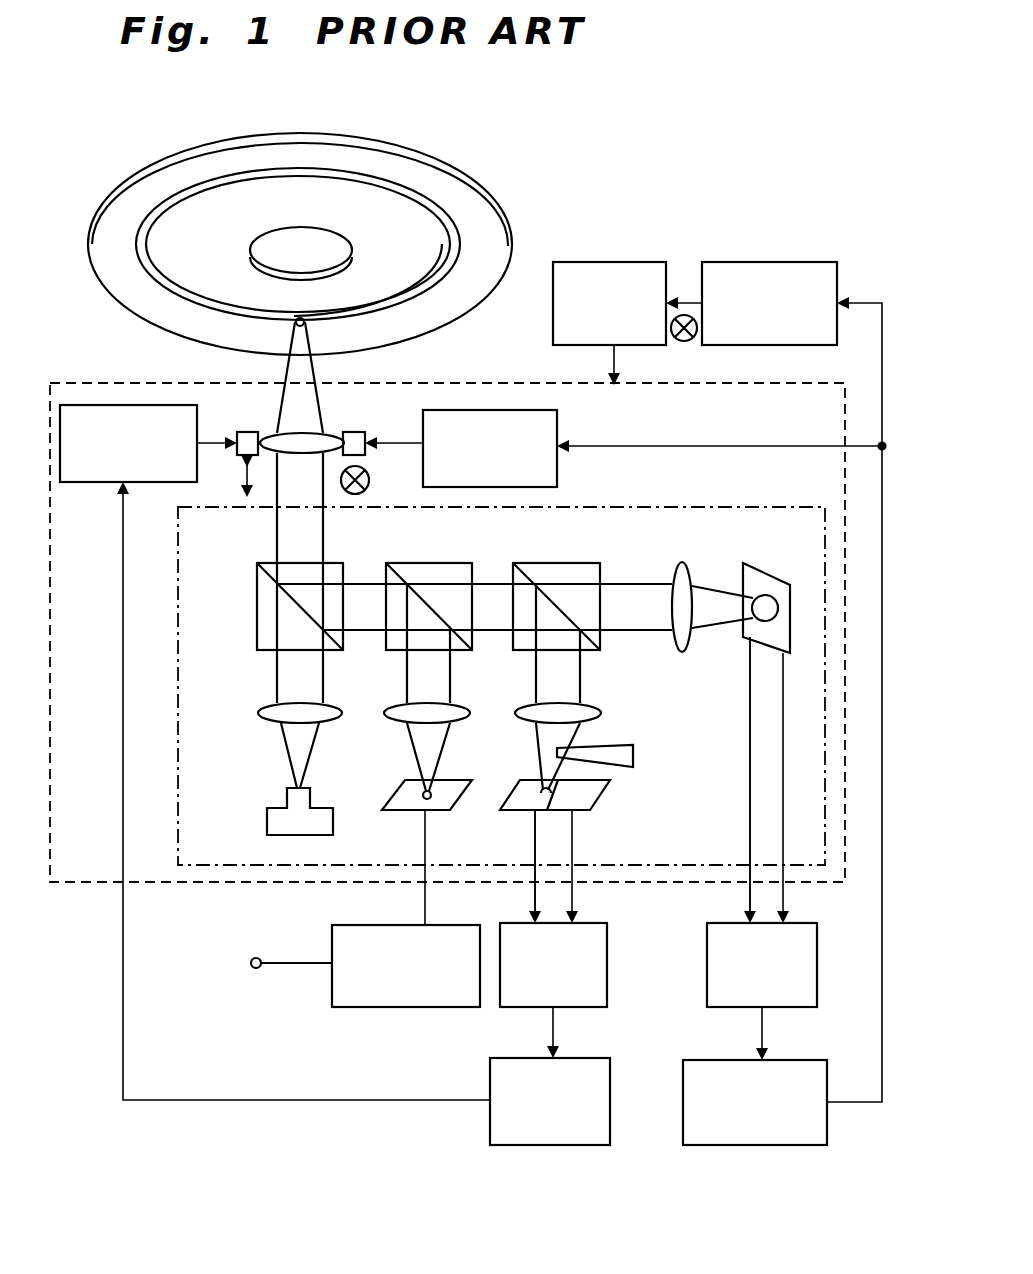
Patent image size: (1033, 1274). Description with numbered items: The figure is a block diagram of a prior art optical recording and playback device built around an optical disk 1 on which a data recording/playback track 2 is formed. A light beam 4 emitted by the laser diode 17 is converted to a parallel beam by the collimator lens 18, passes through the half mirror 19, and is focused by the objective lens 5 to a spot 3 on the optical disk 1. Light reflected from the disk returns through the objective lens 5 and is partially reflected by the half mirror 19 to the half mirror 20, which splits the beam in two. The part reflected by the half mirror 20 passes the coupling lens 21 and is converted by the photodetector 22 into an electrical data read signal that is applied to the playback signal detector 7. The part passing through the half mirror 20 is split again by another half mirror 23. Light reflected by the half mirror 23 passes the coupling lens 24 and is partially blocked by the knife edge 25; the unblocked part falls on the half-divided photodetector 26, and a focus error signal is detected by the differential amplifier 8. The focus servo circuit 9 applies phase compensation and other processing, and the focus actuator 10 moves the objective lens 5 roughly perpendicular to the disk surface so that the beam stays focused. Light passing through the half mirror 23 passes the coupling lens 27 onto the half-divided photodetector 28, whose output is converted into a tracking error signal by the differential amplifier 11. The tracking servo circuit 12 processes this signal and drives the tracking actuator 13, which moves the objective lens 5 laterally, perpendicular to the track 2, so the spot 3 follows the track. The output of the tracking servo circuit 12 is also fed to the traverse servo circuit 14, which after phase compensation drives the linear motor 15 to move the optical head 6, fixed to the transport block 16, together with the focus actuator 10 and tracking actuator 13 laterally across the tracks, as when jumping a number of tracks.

The optical disk 1 is at (428, 155).
The data recording/playback track 2 is at (462, 244).
The spot 3 is at (296, 324).
The light beam 4 is at (320, 432).
The objective lens 5 is at (277, 433).
The optical head 6 is at (622, 507).
The playback signal detector 7 is at (332, 935).
The differential amplifier 8 is at (607, 958).
The focus servo circuit 9 is at (490, 1075).
The focus actuator 10 is at (100, 482).
The differential amplifier 11 is at (707, 942).
The tracking servo circuit 12 is at (683, 1090).
The tracking actuator 13 is at (557, 423).
The traverse servo circuit 14 is at (750, 262).
The linear motor 15 is at (596, 262).
The transport block 16 is at (95, 882).
The laser diode 17 is at (267, 818).
The collimator lens 18 is at (260, 710).
The half mirror 19 is at (257, 617).
The half mirror 20 is at (400, 563).
The coupling lens 21 is at (386, 712).
The photodetector 22 is at (388, 796).
The half mirror 23 is at (540, 563).
The coupling lens 24 is at (518, 710).
The knife edge 25 is at (620, 745).
The ½ divided photodetector 26 is at (510, 797).
The coupling lens 27 is at (680, 565).
The ½ divided photodetector 28 is at (757, 570).